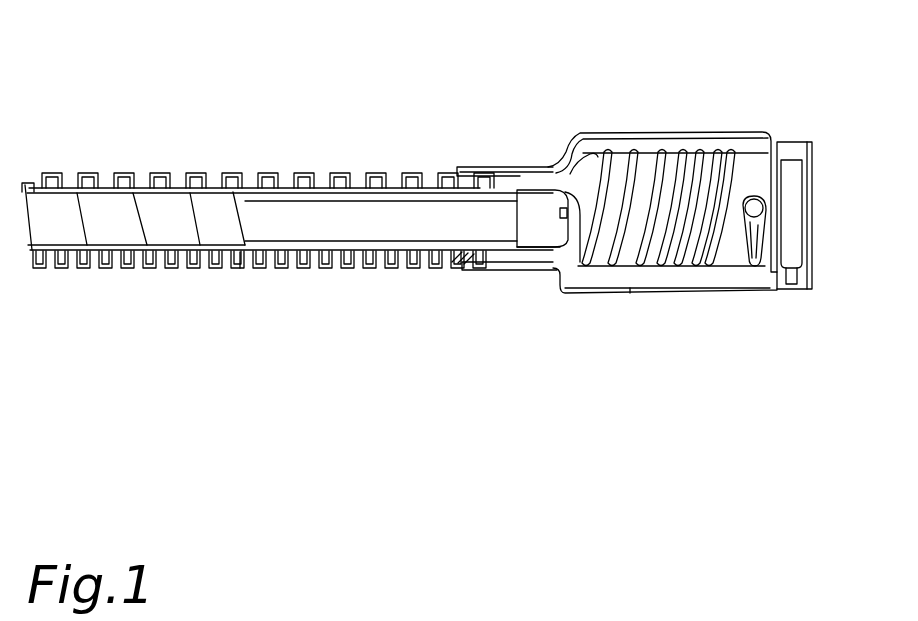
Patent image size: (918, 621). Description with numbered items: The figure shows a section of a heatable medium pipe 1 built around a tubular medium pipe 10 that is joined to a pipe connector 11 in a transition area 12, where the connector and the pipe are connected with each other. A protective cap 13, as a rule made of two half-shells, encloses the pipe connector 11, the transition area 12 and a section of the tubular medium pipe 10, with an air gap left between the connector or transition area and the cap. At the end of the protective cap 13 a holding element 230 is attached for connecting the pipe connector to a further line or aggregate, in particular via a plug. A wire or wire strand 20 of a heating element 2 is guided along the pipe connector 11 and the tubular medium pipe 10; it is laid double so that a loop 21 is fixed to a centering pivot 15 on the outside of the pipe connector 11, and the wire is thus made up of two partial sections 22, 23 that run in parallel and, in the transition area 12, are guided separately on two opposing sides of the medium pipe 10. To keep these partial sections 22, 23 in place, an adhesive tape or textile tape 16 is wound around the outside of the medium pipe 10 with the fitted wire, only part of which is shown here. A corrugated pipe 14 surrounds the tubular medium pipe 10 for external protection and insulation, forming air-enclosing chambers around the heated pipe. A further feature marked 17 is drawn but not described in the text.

The heatable medium pipe 1 is at (86, 58).
The heating element 2 is at (452, 262).
The tubular medium pipe 10 is at (370, 210).
The pipe connector 11 is at (648, 163).
The transition area 12 is at (538, 215).
The protective cap 13 is at (736, 130).
The corrugated pipe 14 is at (262, 176).
The centering pivot 15 is at (754, 203).
The adhesive tape or textile adhesive tape or textile tape 16 is at (152, 173).
The fastening point 17 is at (245, 255).
The wire or wire strand 20 is at (437, 180).
The loop 21 is at (760, 262).
The partial section 22 is at (567, 192).
The partial section 23 is at (535, 253).
The holding element 230 is at (793, 288).